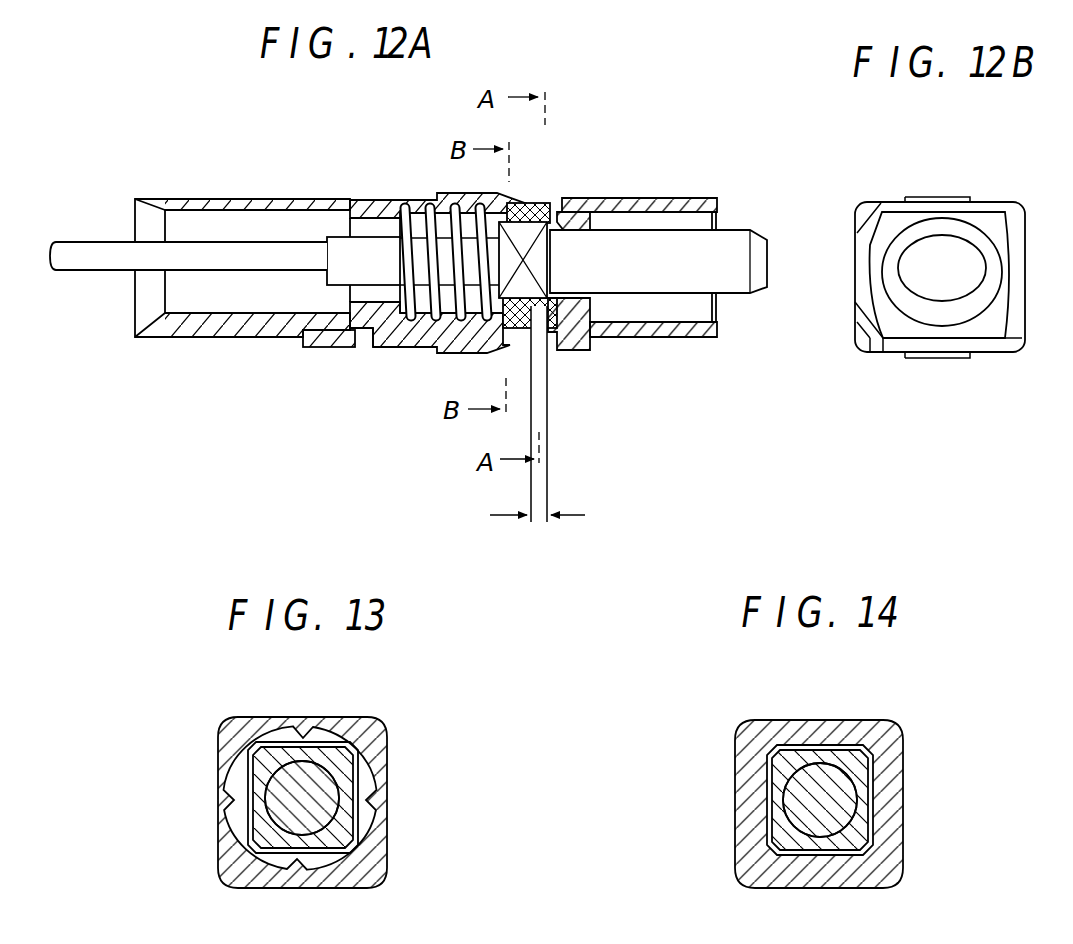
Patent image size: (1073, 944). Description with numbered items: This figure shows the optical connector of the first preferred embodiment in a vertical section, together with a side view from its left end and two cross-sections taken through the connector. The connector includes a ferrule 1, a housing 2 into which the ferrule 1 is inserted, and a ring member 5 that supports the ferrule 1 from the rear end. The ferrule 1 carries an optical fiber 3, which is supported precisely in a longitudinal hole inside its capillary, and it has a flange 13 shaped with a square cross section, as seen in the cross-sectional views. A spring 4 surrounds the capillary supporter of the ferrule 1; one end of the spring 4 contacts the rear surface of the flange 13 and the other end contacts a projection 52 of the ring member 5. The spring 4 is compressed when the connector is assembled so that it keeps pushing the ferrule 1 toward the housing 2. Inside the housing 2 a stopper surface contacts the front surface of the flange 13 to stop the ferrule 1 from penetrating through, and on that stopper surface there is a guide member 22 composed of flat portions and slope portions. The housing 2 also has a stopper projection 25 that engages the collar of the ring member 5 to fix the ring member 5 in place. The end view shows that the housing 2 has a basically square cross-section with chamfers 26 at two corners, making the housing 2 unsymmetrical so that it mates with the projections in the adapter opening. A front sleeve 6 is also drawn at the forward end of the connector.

In FIG. 12A, the ferrule 1 is at (735, 306).
In FIG. 13, the housing 2 is at (336, 714).
In FIG. 14, the housing 2 is at (851, 712).
In FIG. 12A, the optical fiber 3 is at (83, 240).
In FIG. 12A, the spring 4 is at (421, 353).
In FIG. 12A, the ring member 5 is at (222, 194).
In FIG. 12A, the front sleeve 6 is at (622, 193).
In FIG. 12A, the flange 13 is at (522, 285).
In FIG. 13, the flange 13 is at (360, 832).
In FIG. 14, the flange 13 is at (873, 830).
In FIG. 12A, the guide member 22 is at (541, 522).
In FIG. 12A, the stopper projection 25 is at (313, 348).
In FIG. 12B, the chamfer 26 is at (860, 218).
In FIG. 12A, the projection 52 is at (362, 347).